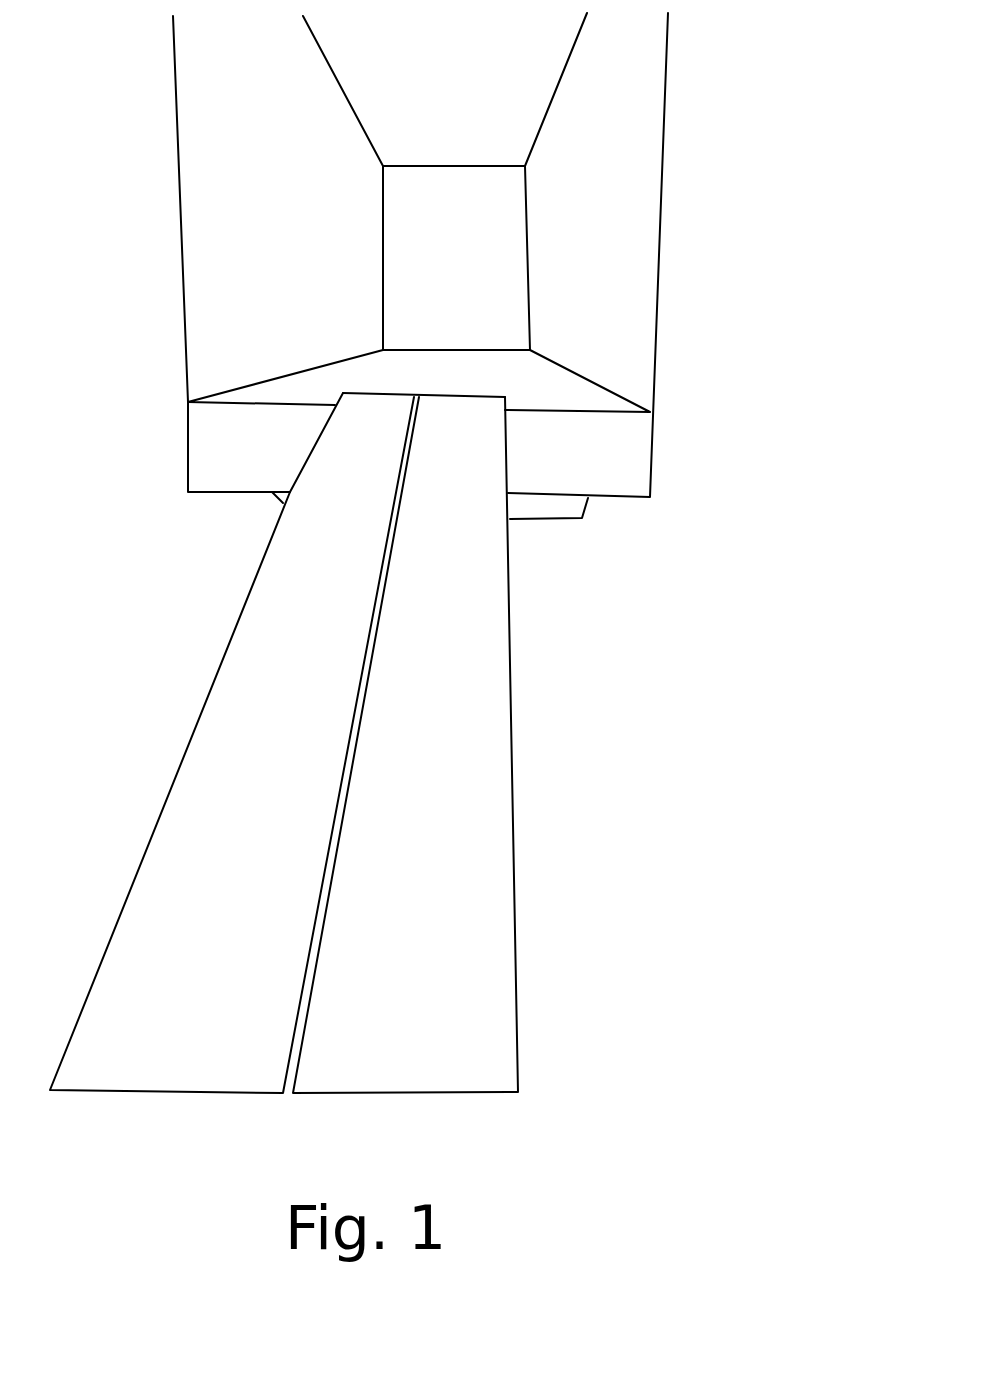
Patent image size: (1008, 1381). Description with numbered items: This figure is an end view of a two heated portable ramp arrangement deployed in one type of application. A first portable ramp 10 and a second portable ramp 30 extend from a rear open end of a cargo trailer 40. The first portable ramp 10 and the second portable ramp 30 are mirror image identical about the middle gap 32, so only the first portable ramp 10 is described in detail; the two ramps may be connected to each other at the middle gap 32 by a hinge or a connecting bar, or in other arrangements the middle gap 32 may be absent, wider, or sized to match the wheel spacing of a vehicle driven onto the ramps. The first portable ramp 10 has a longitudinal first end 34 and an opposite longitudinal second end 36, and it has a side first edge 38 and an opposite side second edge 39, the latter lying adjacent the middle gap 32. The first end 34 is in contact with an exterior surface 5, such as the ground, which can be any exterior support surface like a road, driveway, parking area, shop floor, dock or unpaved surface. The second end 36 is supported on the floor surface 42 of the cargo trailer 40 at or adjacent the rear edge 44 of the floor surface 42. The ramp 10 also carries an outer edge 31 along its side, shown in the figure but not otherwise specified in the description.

The exterior surface 5 is at (528, 1107).
The first portable ramp 10 is at (467, 800).
The second portable ramp 30 is at (195, 747).
The outer edge of first arm 31 is at (478, 913).
The middle gap 32 is at (287, 1093).
The longitudinal first end 34 is at (435, 1093).
The longitudinal second end 36 is at (465, 395).
The side first edge 38 is at (512, 687).
The side second edge 39 is at (347, 778).
The cargo trailer 40 is at (655, 280).
The floor surface 42 is at (520, 402).
The rear edge 44 is at (613, 417).